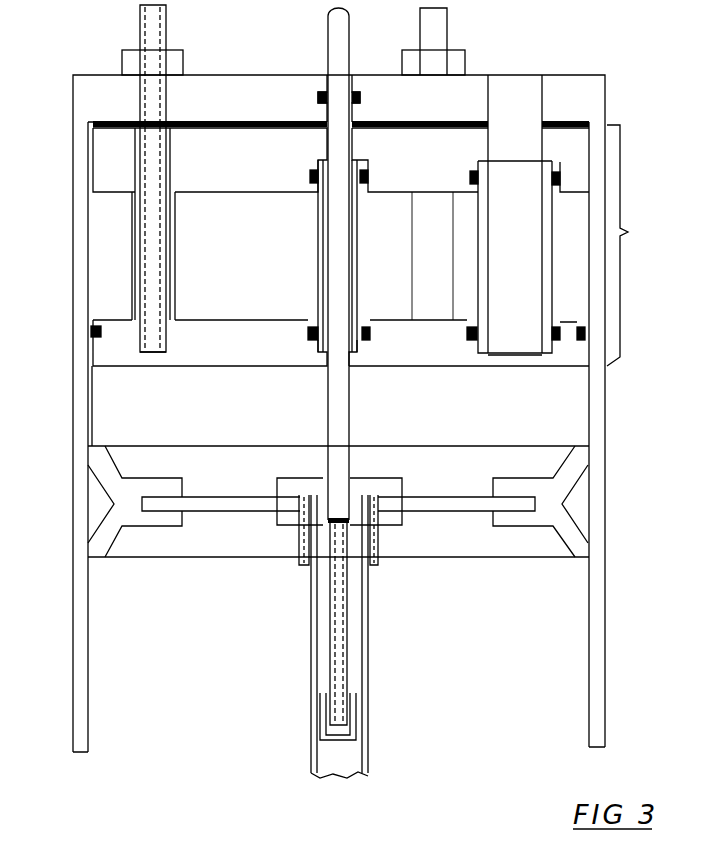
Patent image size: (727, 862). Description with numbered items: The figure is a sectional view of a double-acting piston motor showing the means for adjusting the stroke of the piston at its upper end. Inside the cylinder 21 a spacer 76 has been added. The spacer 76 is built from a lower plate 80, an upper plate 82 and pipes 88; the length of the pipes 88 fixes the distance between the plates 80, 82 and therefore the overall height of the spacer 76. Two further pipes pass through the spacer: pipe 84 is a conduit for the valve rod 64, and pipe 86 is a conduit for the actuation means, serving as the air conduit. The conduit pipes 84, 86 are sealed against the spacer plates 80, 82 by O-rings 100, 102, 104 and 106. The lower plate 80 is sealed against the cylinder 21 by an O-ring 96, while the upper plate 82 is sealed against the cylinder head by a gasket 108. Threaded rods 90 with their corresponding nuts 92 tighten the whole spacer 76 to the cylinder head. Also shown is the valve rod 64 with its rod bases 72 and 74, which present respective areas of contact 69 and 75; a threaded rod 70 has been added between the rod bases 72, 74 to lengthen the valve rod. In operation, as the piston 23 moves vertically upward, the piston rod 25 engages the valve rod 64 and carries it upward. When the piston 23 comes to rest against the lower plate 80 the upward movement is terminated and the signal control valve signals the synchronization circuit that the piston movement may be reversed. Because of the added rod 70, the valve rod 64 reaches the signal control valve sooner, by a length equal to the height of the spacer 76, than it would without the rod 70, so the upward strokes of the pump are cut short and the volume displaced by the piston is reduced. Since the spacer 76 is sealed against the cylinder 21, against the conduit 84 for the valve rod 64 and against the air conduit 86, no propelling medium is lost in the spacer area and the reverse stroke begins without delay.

The cylinder 21 is at (595, 660).
The piston 23 is at (530, 550).
The piston rod 25 is at (313, 655).
The valve rod 64 is at (338, 48).
The area of contact 69 is at (340, 752).
The threaded rod 70 is at (338, 603).
The rod base 72 is at (326, 725).
The rod base 74 is at (318, 552).
The area of contact 75 is at (362, 492).
The spacer 76 is at (636, 245).
The lower plate 80 is at (256, 367).
The upper plate 82 is at (254, 193).
The pipe 84 is at (313, 262).
The pipe 86 is at (553, 268).
The pipes 88 is at (177, 270).
The threaded rods 90 is at (167, 18).
The nuts 92 is at (183, 62).
The O-ring 96 is at (88, 333).
The O-ring 100 is at (308, 336).
The O-ring 102 is at (312, 175).
The O-ring 104 is at (468, 337).
The O-ring 106 is at (472, 177).
The gasket 108 is at (575, 122).